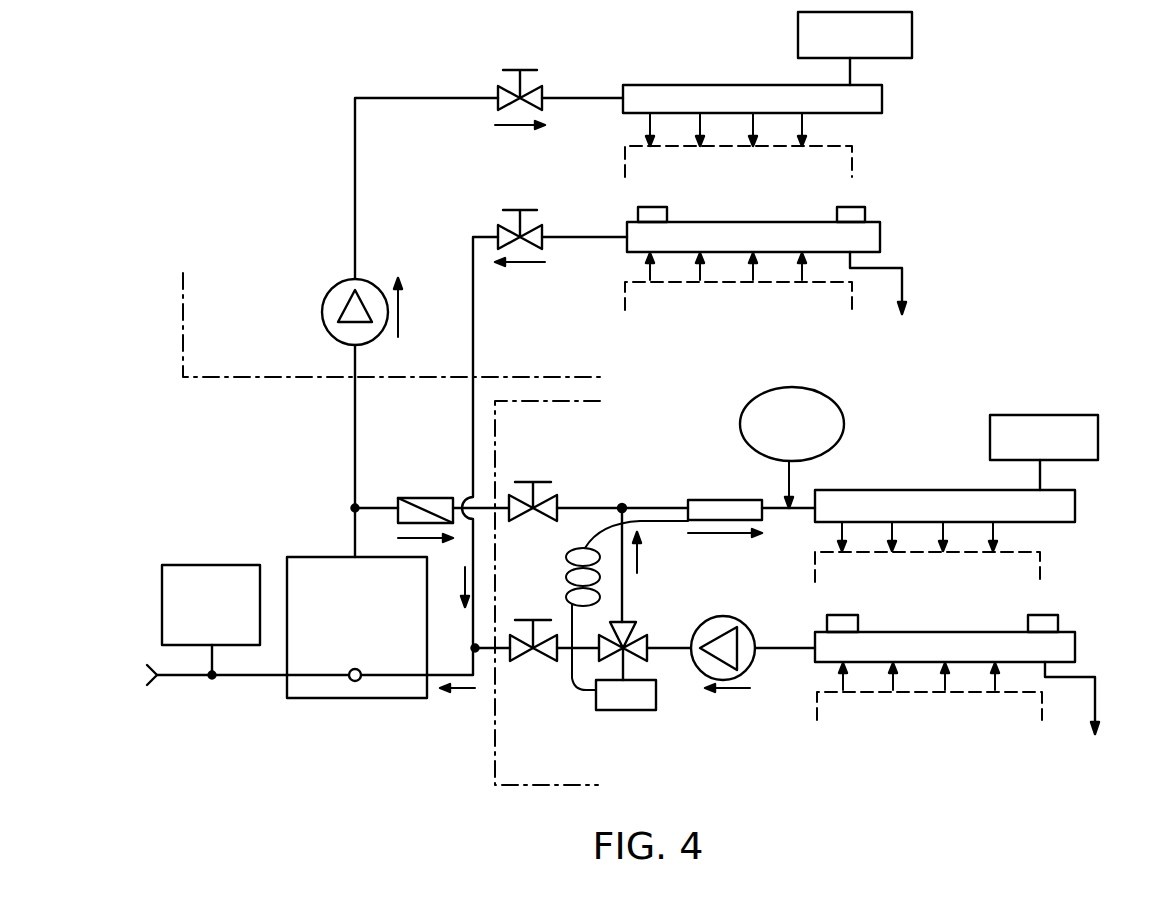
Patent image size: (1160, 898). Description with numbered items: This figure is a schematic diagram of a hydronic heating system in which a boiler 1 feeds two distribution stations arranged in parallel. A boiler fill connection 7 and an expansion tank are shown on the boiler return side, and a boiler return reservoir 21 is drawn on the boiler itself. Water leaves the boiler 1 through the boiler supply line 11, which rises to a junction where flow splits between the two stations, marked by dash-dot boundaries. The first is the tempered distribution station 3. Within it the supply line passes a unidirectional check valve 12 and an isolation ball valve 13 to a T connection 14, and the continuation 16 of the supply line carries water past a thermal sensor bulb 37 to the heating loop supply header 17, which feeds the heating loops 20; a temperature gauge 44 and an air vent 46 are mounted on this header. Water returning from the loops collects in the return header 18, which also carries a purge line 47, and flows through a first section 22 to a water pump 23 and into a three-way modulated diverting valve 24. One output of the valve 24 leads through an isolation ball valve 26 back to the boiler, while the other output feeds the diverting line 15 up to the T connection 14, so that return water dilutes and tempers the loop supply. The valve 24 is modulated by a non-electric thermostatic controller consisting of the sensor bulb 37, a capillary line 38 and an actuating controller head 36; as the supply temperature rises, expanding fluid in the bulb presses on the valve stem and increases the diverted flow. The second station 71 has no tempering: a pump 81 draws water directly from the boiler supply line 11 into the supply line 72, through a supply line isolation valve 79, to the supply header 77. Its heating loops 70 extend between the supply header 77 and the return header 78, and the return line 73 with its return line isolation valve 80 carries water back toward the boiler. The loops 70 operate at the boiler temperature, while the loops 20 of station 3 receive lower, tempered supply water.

The boiler 1 is at (362, 698).
The hydronic distribution station 3 is at (495, 762).
The boiler fill line 7 is at (176, 680).
The boiler supply line 11 is at (355, 450).
The unidirectional check valve 12 is at (418, 498).
The isolation ball valve 13 is at (525, 482).
The T connection 14 is at (622, 503).
The diverting line 15 is at (625, 592).
The continuation of supply line 16 is at (660, 508).
The heating loop supply header 17 is at (1075, 505).
The return header 18 is at (1075, 645).
The heating loops 20 is at (1030, 587).
The boiler return reservoir 21 is at (360, 669).
The first section of return line 22 is at (780, 645).
The water pump 23 is at (720, 616).
The three-way modulated diverting valve 24 is at (660, 658).
The isolation ball valve 26 is at (530, 620).
The actuating controller head 36 is at (625, 710).
The thermal sensor bulb 37 is at (700, 498).
The capillary line 38 is at (568, 540).
The temperature gauge 44 is at (843, 418).
The air vent 46 is at (990, 434).
The purge line 47 is at (1095, 700).
The heating loops 70 is at (868, 168).
The distribution station 71 is at (256, 378).
The supply line 72 is at (355, 152).
The return line 73 is at (575, 237).
The supply header 77 is at (882, 97).
The return header 78 is at (880, 232).
The supply line isolation valve 79 is at (513, 70).
The return line isolation valve 80 is at (515, 208).
The pump 81 is at (328, 296).